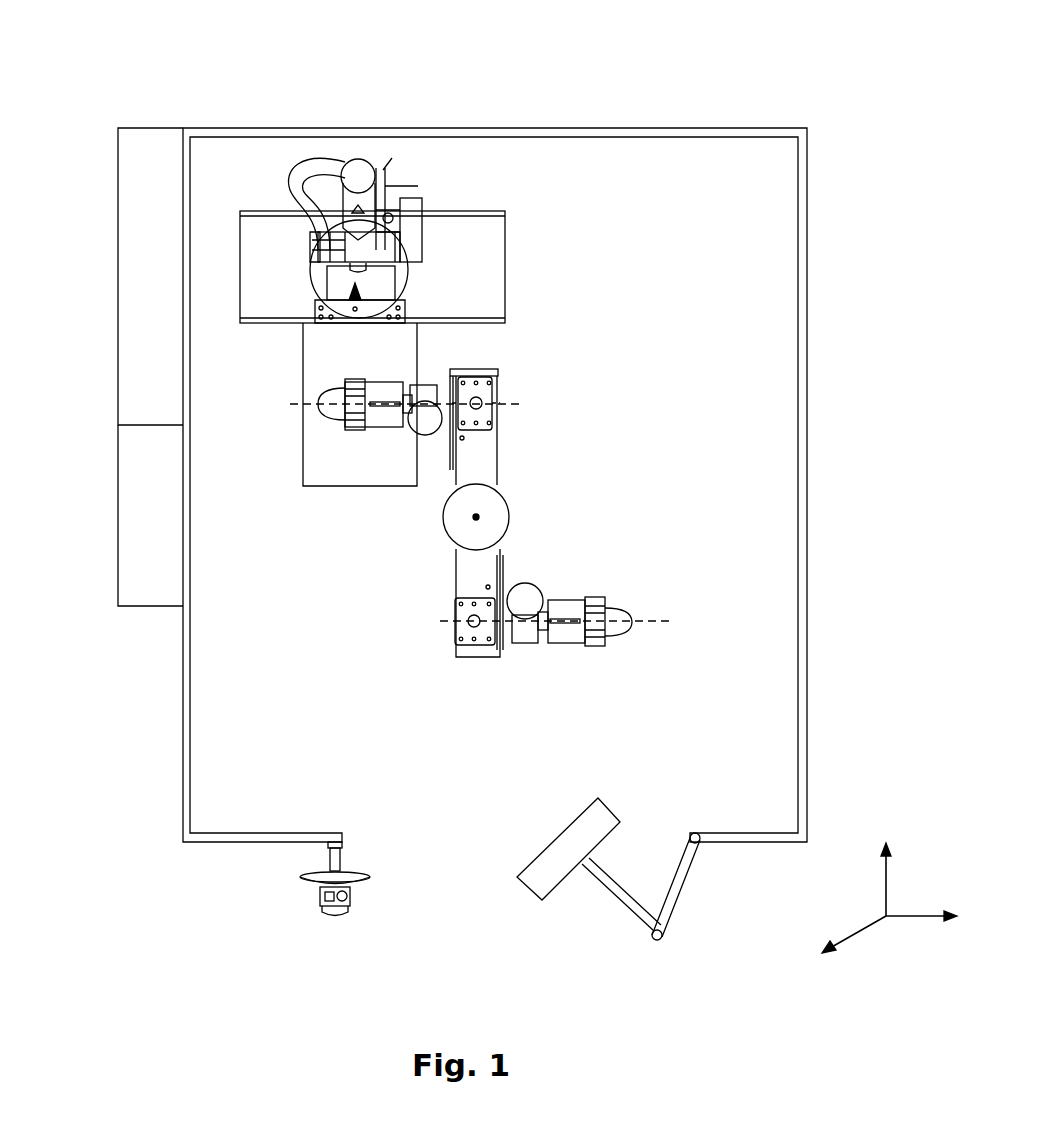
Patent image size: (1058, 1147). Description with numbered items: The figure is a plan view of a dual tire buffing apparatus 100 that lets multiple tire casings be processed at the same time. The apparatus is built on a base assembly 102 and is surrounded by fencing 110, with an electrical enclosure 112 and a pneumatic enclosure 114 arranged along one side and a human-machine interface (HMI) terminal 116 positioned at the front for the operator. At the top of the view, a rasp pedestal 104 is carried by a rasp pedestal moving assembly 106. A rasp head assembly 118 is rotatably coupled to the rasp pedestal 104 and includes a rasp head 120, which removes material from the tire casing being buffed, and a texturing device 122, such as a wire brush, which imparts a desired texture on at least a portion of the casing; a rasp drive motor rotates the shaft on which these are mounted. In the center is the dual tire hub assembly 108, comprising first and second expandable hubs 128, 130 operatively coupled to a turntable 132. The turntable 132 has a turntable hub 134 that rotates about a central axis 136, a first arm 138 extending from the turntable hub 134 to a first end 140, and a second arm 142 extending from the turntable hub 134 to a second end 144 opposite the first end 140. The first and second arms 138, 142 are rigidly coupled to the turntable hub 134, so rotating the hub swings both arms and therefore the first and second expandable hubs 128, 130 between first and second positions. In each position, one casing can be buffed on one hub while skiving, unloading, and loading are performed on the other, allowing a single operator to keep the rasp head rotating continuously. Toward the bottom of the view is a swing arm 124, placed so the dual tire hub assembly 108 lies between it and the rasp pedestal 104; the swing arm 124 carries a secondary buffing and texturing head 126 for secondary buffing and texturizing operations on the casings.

The dual tire buffing apparatus 100 is at (141, 56).
The base assembly 102 is at (302, 671).
The rasp pedestal 104 is at (412, 215).
The rasp pedestal moving assembly 106 is at (495, 237).
The dual tire hub assembly 108 is at (637, 436).
The fencing 110 is at (188, 728).
The electrical enclosure 112 is at (132, 292).
The pneumatic enclosure 114 is at (132, 538).
The human-machine interface (HMI) terminal 116 is at (332, 917).
The rasp head assembly 118 is at (350, 303).
The rasp head 120 is at (363, 270).
The texturing device 122 is at (327, 278).
The swing arm 124 is at (622, 903).
The secondary buffing and texturing head 126 is at (557, 843).
The first expandable hub 128 is at (320, 405).
The second expandable hub 130 is at (627, 607).
The turntable 132 is at (590, 516).
The turntable hub 134 is at (498, 530).
The central axis 136 is at (474, 518).
The first arm 138 is at (490, 460).
The first end 140 is at (475, 368).
The second arm 142 is at (463, 575).
The second end 144 is at (478, 655).